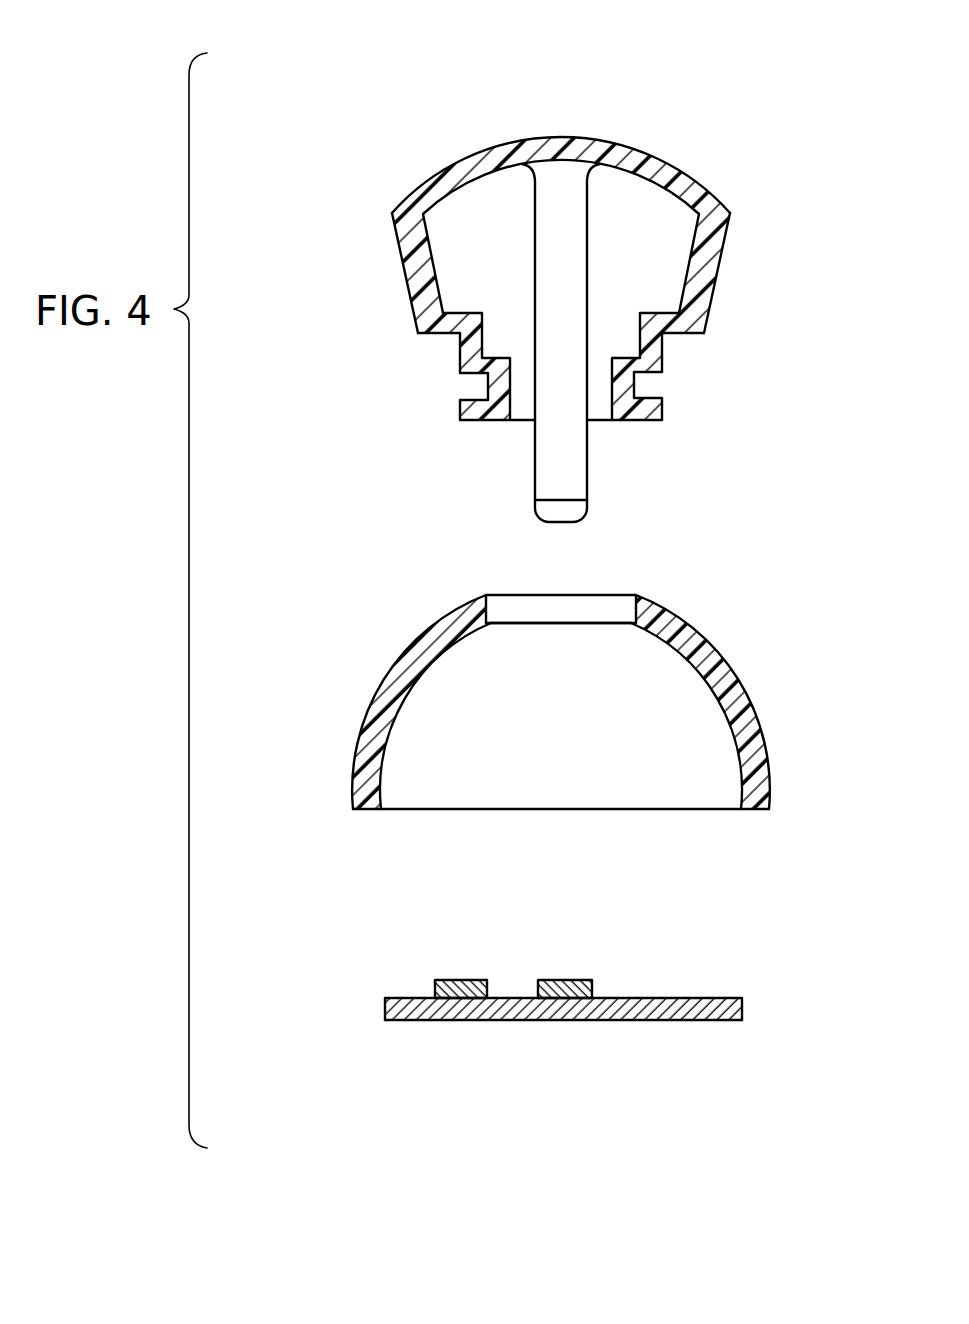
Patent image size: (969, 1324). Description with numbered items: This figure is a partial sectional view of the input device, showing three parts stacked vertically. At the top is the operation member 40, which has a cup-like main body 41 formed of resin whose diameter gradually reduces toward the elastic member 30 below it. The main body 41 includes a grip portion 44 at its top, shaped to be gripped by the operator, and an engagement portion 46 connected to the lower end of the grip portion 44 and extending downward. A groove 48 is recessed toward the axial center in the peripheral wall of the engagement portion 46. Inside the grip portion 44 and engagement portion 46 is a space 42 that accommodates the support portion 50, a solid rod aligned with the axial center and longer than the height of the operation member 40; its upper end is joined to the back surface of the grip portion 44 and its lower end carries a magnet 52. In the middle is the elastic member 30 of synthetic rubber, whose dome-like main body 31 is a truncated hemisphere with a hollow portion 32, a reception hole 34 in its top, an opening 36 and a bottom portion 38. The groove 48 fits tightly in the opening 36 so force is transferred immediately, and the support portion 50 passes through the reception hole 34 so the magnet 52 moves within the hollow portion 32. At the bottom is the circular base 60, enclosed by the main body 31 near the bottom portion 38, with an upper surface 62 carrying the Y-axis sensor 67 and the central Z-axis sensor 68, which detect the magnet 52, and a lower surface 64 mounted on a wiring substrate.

The elastic member 30 is at (337, 570).
The dome-like main body 31 is at (355, 720).
The hollow portion 32 is at (703, 667).
The reception hole 34 is at (622, 587).
The opening 36 is at (492, 613).
The bottom portion 38 is at (682, 811).
The operation member 40 is at (717, 112).
The cup-like main body 41 is at (718, 289).
The space 42 is at (700, 240).
The grip portion 44 is at (428, 192).
The engagement portion 46 is at (470, 348).
The groove 48 is at (633, 388).
The support portion 50 is at (548, 209).
The magnet 52 is at (555, 505).
The base 60 is at (397, 1060).
The upper surface 62 is at (653, 997).
The lower surface 64 is at (590, 1022).
The Y-axis directional sensor 67 is at (463, 982).
The Z-axis directional sensor 68 is at (560, 980).